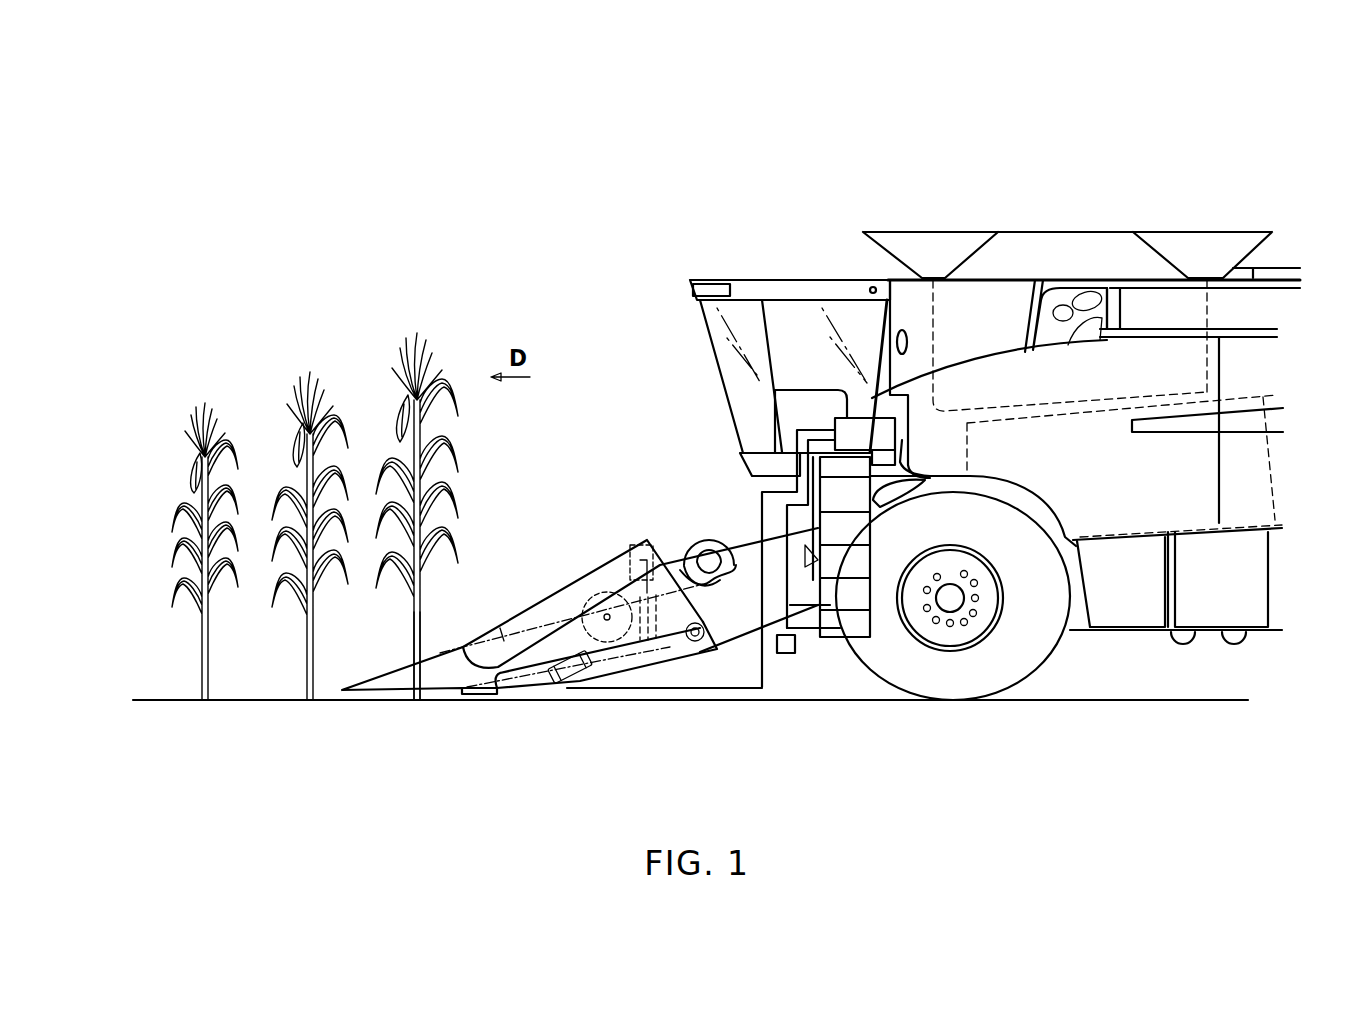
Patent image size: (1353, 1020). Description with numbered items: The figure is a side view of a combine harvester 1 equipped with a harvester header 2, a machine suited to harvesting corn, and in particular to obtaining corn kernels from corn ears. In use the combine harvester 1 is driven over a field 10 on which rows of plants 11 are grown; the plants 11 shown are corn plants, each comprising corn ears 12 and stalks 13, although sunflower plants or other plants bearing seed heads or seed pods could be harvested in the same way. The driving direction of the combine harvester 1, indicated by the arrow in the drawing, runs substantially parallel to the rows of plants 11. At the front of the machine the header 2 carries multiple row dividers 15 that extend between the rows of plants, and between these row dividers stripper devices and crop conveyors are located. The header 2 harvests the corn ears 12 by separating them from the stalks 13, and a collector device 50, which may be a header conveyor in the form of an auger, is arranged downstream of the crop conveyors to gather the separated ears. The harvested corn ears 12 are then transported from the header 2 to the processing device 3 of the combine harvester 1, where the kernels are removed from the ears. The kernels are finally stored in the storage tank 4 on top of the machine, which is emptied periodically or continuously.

The combine harvester 1 is at (1003, 406).
The harvester header 2 is at (580, 487).
The processing device 3 is at (1187, 485).
The storage tank 4 is at (1058, 238).
The field 10 is at (266, 701).
The plants 11 is at (212, 388).
The corn ears 12 is at (195, 455).
The stalks 13 is at (420, 624).
The row dividers 15 is at (443, 690).
The collector device 50 is at (601, 593).